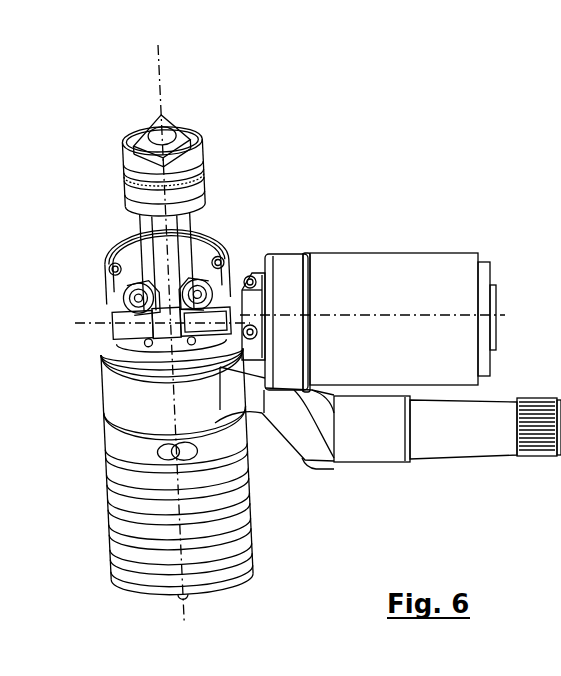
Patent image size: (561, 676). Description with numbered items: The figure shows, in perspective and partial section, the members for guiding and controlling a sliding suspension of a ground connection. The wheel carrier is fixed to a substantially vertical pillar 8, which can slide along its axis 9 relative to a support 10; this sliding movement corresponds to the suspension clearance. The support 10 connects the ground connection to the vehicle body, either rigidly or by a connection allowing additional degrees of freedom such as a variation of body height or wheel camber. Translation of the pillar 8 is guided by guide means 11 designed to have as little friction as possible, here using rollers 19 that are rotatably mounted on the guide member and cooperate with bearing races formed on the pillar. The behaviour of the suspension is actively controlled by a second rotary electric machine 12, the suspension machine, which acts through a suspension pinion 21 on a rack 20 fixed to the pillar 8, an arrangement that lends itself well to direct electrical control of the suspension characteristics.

The pillar 8 is at (137, 208).
The axis 9 is at (161, 82).
The support 10 is at (305, 440).
The guide means 11 is at (252, 248).
The second rotary electric machine 12 is at (386, 275).
The rollers 19 is at (105, 290).
The rack 20 is at (172, 266).
The suspension pinion 21 is at (122, 240).